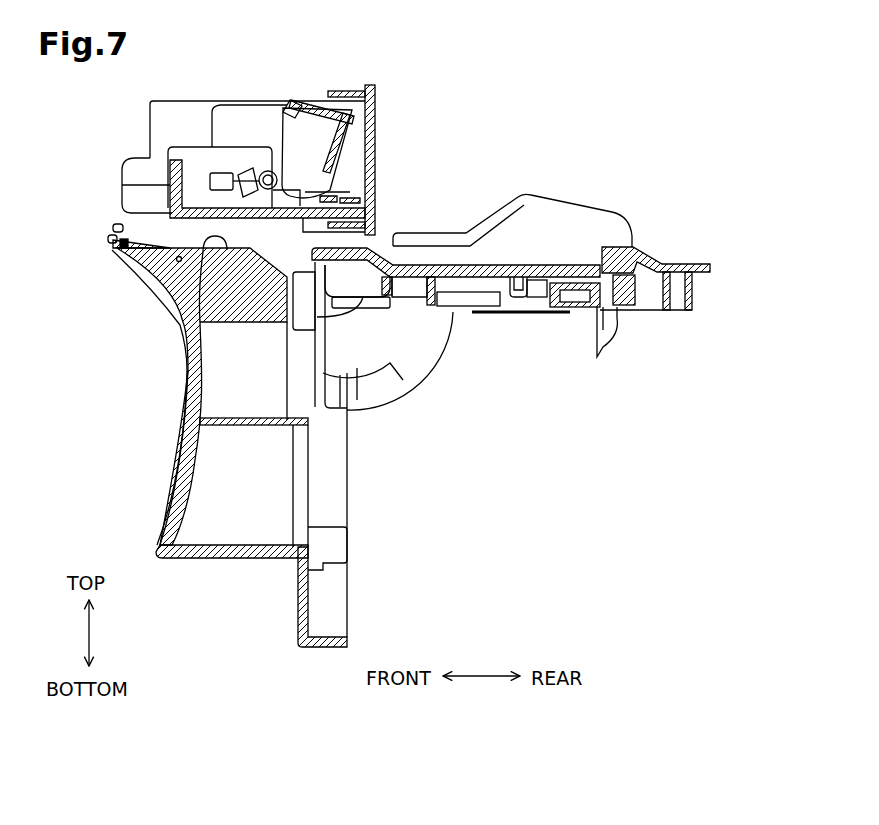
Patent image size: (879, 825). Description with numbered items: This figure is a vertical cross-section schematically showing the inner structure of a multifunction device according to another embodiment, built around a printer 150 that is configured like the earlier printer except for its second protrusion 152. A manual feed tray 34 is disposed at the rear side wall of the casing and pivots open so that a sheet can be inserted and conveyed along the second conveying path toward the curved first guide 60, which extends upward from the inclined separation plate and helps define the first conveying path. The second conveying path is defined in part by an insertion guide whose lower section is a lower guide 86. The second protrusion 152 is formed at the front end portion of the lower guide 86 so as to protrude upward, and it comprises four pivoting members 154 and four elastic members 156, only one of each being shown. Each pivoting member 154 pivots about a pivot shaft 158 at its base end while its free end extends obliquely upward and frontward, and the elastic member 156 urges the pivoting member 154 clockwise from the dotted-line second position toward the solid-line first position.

The manual feed tray 34 is at (584, 182).
The first guide 60 is at (178, 478).
The lower guide 86 is at (183, 348).
The printer 150 is at (155, 410).
The second protrusion 152 is at (102, 241).
The pivoting member 154 is at (122, 228).
The elastic member 156 is at (110, 252).
The pivot shaft 158 is at (170, 308).